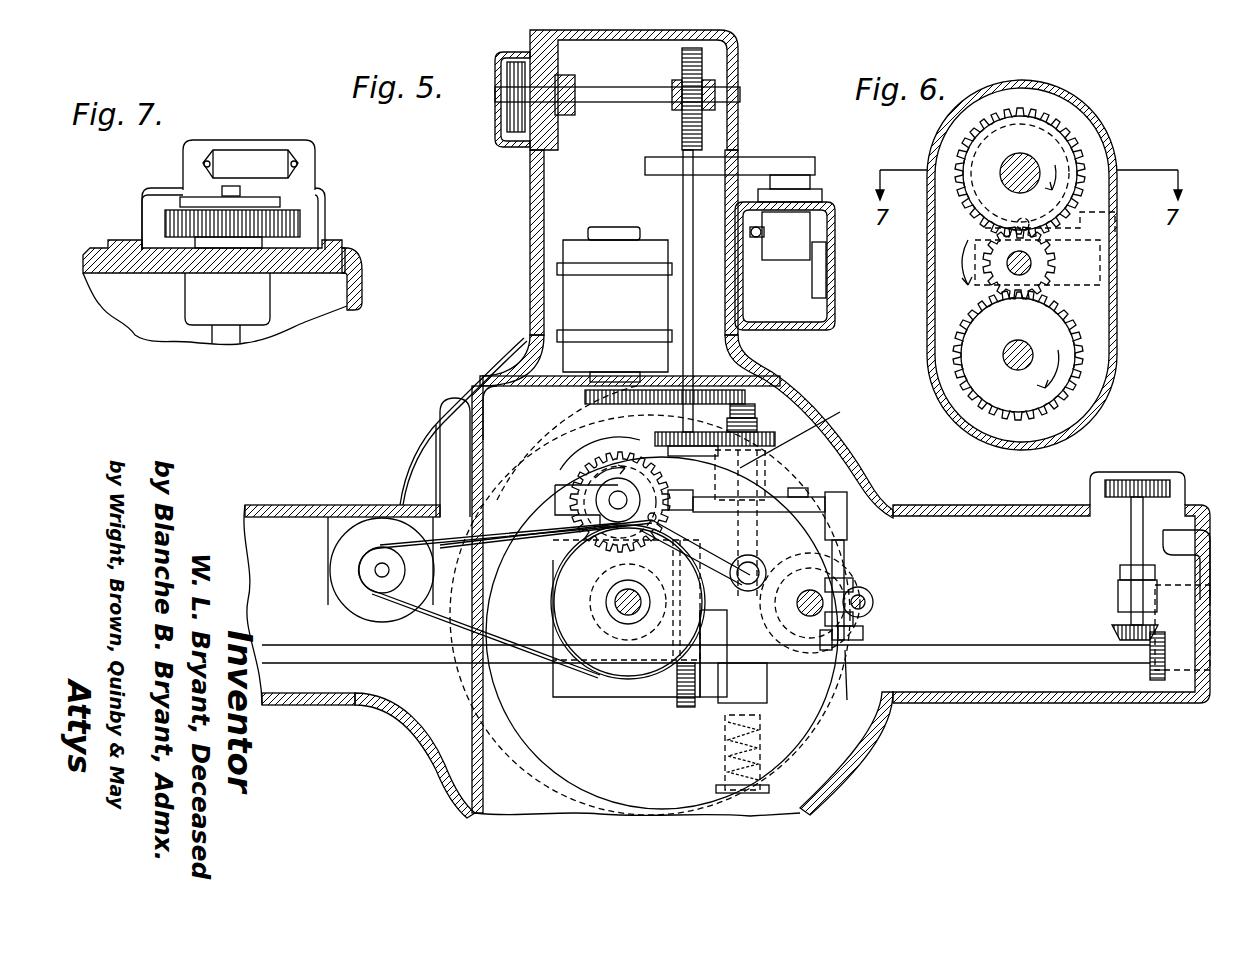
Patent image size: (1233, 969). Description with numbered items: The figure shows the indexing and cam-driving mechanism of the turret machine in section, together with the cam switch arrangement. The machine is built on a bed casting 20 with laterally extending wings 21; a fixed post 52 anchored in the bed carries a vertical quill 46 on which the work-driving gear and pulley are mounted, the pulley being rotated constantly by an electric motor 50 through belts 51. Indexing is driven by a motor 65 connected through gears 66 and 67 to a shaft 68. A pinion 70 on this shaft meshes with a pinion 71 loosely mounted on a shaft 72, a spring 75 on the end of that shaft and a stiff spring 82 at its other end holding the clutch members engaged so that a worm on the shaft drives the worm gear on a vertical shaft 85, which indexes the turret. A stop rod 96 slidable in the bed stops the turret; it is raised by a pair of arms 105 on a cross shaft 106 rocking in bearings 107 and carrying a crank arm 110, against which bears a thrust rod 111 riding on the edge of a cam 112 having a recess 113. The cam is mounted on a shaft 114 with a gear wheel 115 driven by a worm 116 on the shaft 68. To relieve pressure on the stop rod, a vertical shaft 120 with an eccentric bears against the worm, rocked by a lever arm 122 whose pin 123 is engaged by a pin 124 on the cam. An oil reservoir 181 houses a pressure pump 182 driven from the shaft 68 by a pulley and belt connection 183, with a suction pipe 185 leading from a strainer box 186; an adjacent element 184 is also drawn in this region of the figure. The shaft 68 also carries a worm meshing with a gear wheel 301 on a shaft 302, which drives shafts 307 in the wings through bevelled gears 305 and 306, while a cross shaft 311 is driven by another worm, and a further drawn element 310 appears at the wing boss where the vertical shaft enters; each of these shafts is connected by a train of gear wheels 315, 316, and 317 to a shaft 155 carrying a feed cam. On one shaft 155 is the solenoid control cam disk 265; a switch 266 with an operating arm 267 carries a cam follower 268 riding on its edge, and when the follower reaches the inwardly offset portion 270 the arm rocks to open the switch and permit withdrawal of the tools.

In FIG. 5, the bed casting 20 is at (430, 750).
In FIG. 5, the wings 21 is at (530, 240).
In FIG. 5, the vertical quill 46 is at (612, 640).
In FIG. 5, the electric motor 50 is at (335, 595).
In FIG. 5, the belts 51 is at (440, 640).
In FIG. 5, the fixed shaft or post 52 is at (628, 640).
In FIG. 5, the motor 65 is at (596, 248).
In FIG. 5, the gear 66 is at (585, 397).
In FIG. 5, the gear 67 is at (742, 362).
In FIG. 5, the shaft 68 is at (683, 297).
In FIG. 5, the pinion 70 is at (668, 432).
In FIG. 5, the pinion 71 is at (758, 425).
In FIG. 5, the shaft 72 is at (765, 478).
In FIG. 5, the spring 75 is at (760, 410).
In FIG. 5, the stiff spring 82 is at (760, 740).
In FIG. 5, the vertical shaft 85 is at (808, 618).
In FIG. 5, the stop rod 96 is at (875, 598).
In FIG. 5, the arms 105 is at (855, 583).
In FIG. 5, the cross shaft 106 is at (815, 573).
In FIG. 5, the bearings 107 is at (860, 520).
In FIG. 5, the crank arm 110 is at (838, 492).
In FIG. 5, the thrust rod 111 is at (785, 512).
In FIG. 5, the cam 112 is at (620, 455).
In FIG. 5, the recess 113 is at (690, 490).
In FIG. 5, the shaft 114 is at (555, 503).
In FIG. 5, the gear wheel 115 is at (575, 470).
In FIG. 5, the worm 116 is at (800, 445).
In FIG. 5, the vertical shaft 120 is at (752, 592).
In FIG. 5, the lever arm 122 is at (693, 705).
In FIG. 5, the pin 123 is at (600, 556).
In FIG. 5, the pin 124 is at (608, 500).
In FIG. 6, the shaft 155 is at (1012, 160).
In FIG. 5, the reservoir 181 is at (830, 318).
In FIG. 5, the pressure pump 182 is at (795, 238).
In FIG. 5, the pulley and belt connection 183 is at (785, 157).
In FIG. 5, the bracket 184 is at (835, 652).
In FIG. 5, the suction pipe 185 is at (812, 232).
In FIG. 5, the strainer box 186 is at (826, 290).
In FIG. 7, the cam disk 265 is at (282, 202).
In FIG. 6, the cam disk 265 is at (1075, 135).
In FIG. 7, the switch 266 is at (260, 145).
In FIG. 7, the operating arm 267 is at (230, 190).
In FIG. 6, the operating arm 267 is at (1040, 260).
In FIG. 6, the cam follower 268 is at (990, 240).
In FIG. 6, the offset portion 270 is at (1012, 222).
In FIG. 5, the gear wheel 301 is at (675, 705).
In FIG. 5, the shaft 302 is at (1000, 646).
In FIG. 5, the bevelled gear 305 is at (1150, 672).
In FIG. 5, the bevelled gear 306 is at (1112, 628).
In FIG. 6, the shaft 307 is at (1010, 365).
In FIG. 5, the shaft 307 is at (1131, 553).
In FIG. 5, the gear 310 is at (1140, 472).
In FIG. 5, the cross shaft 311 is at (605, 87).
In FIG. 6, the gear wheel 315 is at (975, 343).
In FIG. 5, the gear wheel 315 is at (512, 100).
In FIG. 6, the gear wheel 316 is at (1045, 245).
In FIG. 7, the gear wheel 317 is at (300, 222).
In FIG. 6, the gear wheel 317 is at (1078, 142).